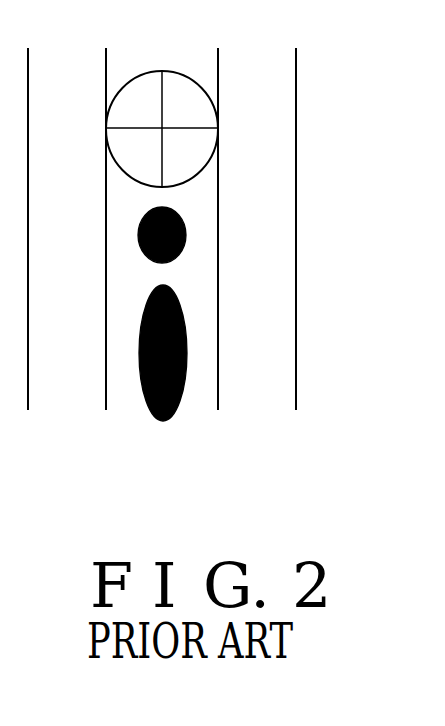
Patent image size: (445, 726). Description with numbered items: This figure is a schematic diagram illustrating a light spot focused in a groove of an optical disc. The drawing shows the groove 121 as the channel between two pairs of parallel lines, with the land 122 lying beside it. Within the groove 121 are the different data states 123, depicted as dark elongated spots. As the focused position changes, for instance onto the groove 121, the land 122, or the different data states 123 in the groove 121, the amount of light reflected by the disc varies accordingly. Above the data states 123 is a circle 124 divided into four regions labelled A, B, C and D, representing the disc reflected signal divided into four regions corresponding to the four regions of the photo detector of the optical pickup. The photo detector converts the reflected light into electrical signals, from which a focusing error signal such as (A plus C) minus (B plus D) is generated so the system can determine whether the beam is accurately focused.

The groove 121 is at (128, 402).
The land 122 is at (282, 268).
The data states 123 is at (173, 415).
The four-quadrant photodetector 124 is at (198, 90).